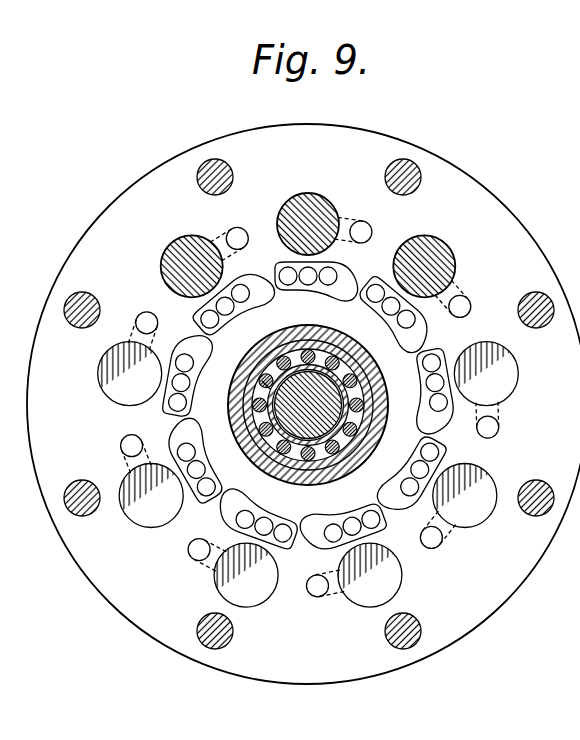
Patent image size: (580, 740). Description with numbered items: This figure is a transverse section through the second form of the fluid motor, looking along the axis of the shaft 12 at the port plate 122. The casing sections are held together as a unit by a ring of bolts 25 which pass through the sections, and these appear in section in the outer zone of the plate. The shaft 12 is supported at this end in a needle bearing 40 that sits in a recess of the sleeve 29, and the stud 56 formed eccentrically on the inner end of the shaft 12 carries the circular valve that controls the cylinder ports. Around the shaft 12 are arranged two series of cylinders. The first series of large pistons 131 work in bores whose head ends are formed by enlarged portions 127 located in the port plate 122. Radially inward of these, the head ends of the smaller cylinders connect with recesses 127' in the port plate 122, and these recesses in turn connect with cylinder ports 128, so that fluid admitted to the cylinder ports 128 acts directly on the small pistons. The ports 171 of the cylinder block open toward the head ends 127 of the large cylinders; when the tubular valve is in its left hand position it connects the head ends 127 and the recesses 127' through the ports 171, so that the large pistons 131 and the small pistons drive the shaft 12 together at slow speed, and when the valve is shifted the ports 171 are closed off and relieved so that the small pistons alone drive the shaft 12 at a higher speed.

The shaft 12 is at (325, 411).
The bolts 25 is at (524, 511).
The sleeve 29 is at (325, 331).
The needle bearing 40 is at (370, 380).
The stud 56 is at (270, 389).
The port plate 122 is at (503, 601).
The enlarged portions 127 is at (308, 485).
The recesses 127' is at (298, 409).
The cylinder ports 128 is at (367, 511).
The large pistons 131 is at (338, 212).
The ports 171 is at (198, 561).